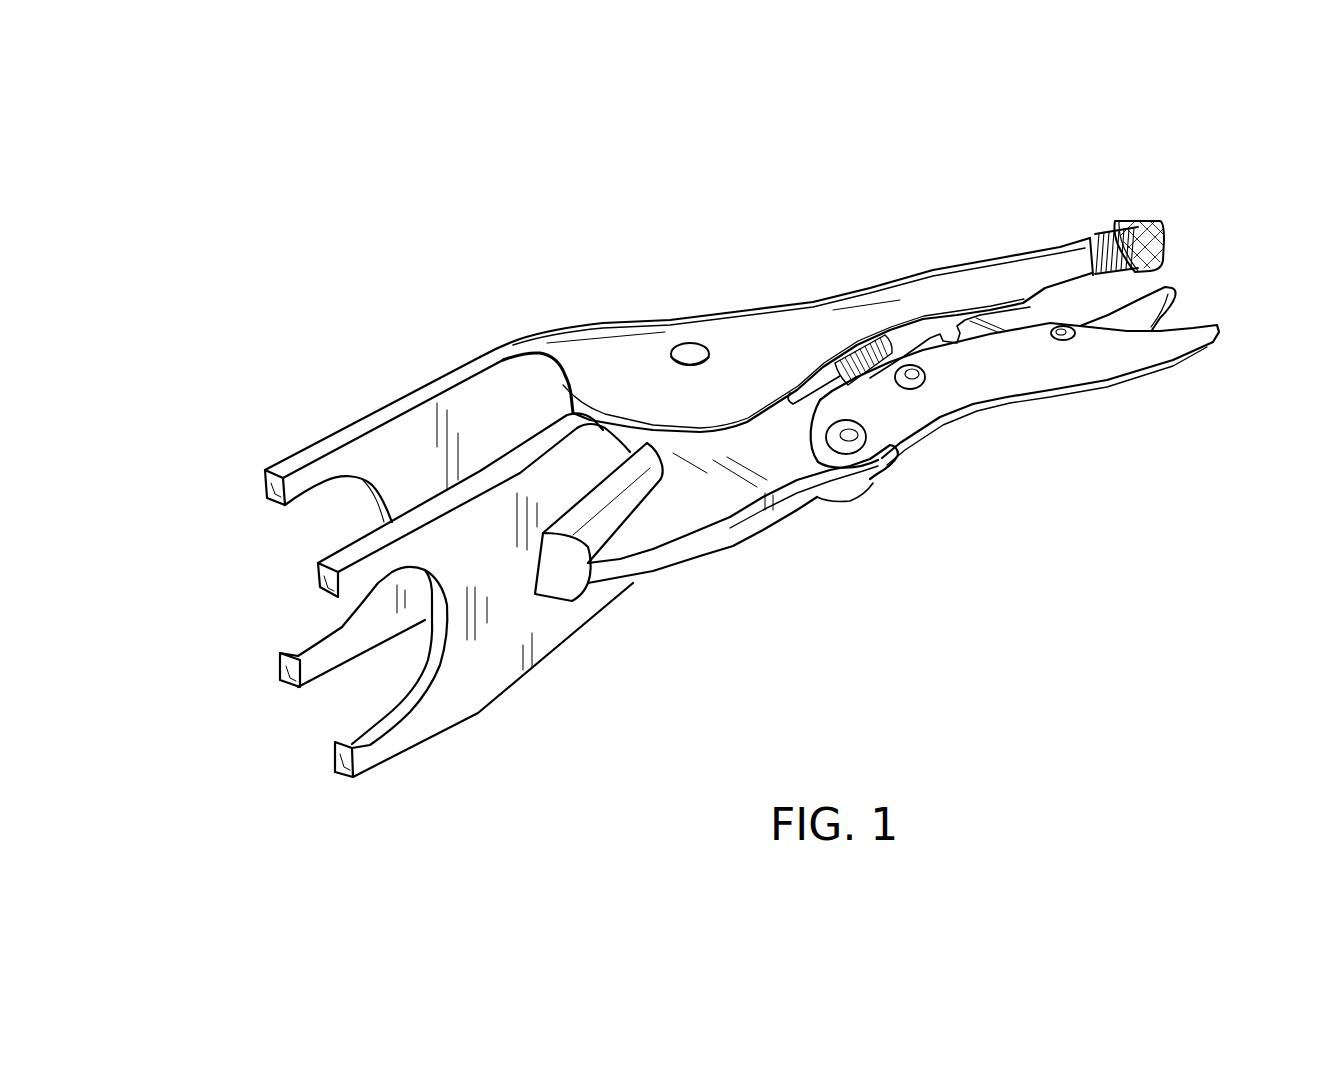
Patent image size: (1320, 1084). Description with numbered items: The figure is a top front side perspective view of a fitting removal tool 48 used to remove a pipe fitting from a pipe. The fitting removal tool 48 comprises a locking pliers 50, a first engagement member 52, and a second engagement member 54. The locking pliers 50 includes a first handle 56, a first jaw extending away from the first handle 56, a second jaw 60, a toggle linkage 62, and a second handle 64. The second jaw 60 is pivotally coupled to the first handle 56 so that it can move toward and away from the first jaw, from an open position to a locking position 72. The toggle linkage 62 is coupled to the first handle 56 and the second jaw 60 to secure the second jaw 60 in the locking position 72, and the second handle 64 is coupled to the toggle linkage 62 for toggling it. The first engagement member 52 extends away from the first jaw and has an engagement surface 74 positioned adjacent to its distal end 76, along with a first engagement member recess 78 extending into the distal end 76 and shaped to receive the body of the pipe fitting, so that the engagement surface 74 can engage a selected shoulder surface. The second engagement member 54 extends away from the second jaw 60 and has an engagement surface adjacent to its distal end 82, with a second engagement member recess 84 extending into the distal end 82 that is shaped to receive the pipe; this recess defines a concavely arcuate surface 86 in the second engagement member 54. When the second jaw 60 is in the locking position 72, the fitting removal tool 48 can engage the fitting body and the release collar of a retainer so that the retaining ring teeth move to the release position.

The fitting removal tool 48 is at (634, 164).
The locking pliers 50 is at (600, 335).
The first engagement member 52 is at (268, 490).
The second engagement member 54 is at (427, 713).
The first handle 56 is at (983, 273).
The second jaw 60 is at (667, 537).
The toggle linkage 62 is at (1217, 296).
The second handle 64 is at (1097, 373).
The locking position 72 is at (382, 794).
The engagement surface 74 is at (428, 430).
The distal end 76 is at (287, 658).
The first engagement member recess 78 is at (276, 561).
The distal end 82 is at (340, 768).
The second engagement member recess 84 is at (318, 705).
The concavely arcuate surface 86 is at (430, 640).